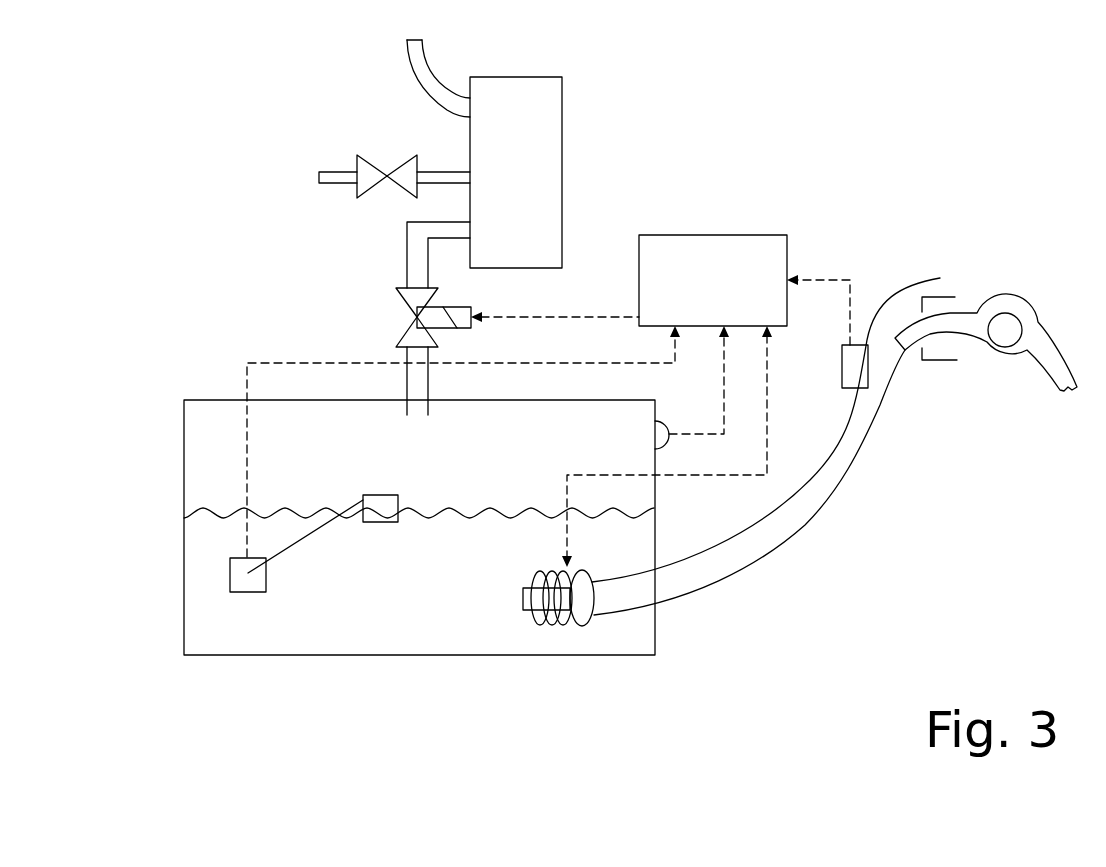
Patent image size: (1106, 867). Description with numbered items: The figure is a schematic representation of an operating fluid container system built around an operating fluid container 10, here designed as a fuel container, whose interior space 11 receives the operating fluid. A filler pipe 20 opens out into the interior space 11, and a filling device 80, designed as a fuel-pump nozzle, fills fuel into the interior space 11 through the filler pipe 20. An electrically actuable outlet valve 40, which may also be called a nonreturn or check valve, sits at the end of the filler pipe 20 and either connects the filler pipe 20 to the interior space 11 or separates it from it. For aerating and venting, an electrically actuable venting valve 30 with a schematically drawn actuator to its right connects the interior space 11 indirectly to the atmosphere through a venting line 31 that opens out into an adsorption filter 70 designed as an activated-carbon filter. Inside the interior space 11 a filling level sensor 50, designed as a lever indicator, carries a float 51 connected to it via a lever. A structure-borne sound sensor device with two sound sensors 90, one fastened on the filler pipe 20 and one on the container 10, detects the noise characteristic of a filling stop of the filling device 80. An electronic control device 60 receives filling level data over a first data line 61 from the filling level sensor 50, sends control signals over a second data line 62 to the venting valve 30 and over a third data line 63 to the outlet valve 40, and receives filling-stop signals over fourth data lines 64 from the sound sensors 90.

The operating fluid container 10 is at (337, 657).
The interior space 11 is at (203, 453).
The filler pipe 20 is at (767, 538).
The venting valve 30 is at (413, 335).
The venting line 31 is at (410, 246).
The outlet valve 40 is at (580, 608).
The filling level sensor 50 is at (240, 583).
The float 51 is at (387, 513).
The electronic control device 60 is at (773, 258).
The first data line 61 is at (285, 363).
The second data line 62 is at (585, 317).
The third data line 63 is at (767, 375).
The fourth data lines 64 is at (850, 292).
The adsorption filter 70 is at (550, 147).
The filling device 80 is at (1040, 345).
The sound sensor 90 is at (667, 434).